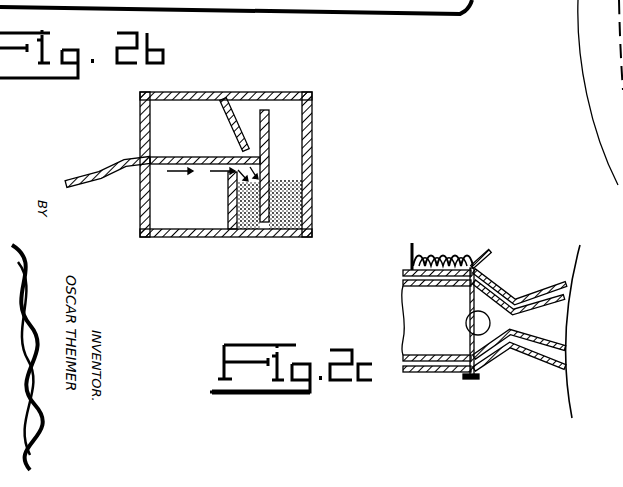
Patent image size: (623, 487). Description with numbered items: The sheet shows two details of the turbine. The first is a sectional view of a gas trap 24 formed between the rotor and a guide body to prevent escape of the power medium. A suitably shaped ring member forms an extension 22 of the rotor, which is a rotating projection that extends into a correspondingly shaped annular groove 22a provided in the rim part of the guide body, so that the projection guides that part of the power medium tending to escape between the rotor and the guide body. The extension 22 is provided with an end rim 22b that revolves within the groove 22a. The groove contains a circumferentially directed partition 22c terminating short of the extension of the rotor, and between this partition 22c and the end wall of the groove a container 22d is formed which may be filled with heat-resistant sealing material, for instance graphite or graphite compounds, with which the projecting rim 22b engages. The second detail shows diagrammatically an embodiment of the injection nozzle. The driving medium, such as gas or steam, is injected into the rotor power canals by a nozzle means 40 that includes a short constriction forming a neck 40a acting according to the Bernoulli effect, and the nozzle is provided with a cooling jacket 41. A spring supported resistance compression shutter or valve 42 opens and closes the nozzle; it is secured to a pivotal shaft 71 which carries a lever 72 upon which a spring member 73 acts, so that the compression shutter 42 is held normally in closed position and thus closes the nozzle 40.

In FIG. 2B, the extension 22 is at (77, 178).
In FIG. 2B, the annular groove 22a is at (184, 218).
In FIG. 2B, the end rim 22b is at (270, 146).
In FIG. 2B, the partition 22c is at (226, 208).
In FIG. 2B, the container 22d is at (300, 211).
In FIG. 2B, the gas trap 24 is at (199, 120).
In FIG. 2C, the nozzle means 40 is at (535, 332).
In FIG. 2C, the neck 40a is at (512, 328).
In FIG. 2C, the cooling jacket 41 is at (545, 360).
In FIG. 2C, the compression shutter 42 is at (466, 324).
In FIG. 2C, the pivotal shaft 71 is at (462, 378).
In FIG. 2C, the lever 72 is at (486, 260).
In FIG. 2C, the spring member 73 is at (450, 265).